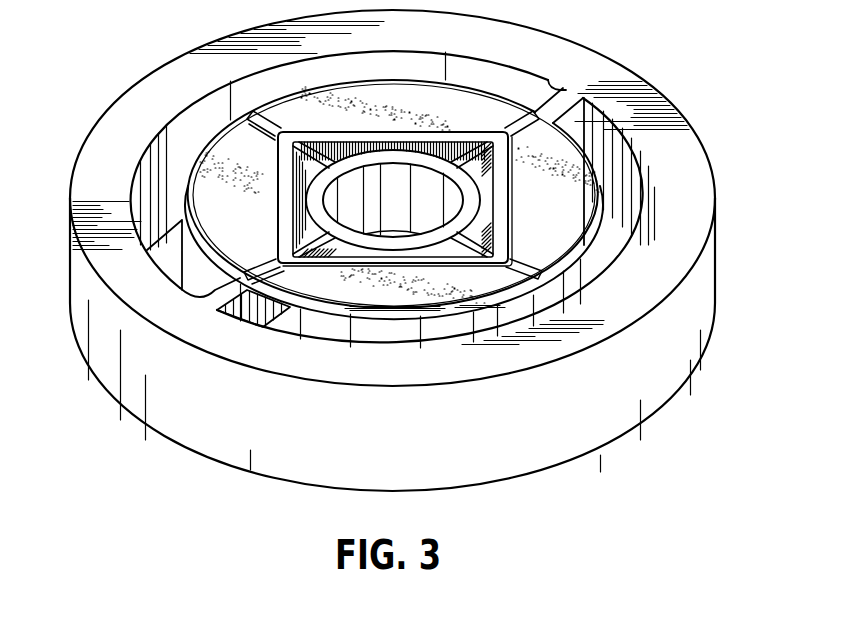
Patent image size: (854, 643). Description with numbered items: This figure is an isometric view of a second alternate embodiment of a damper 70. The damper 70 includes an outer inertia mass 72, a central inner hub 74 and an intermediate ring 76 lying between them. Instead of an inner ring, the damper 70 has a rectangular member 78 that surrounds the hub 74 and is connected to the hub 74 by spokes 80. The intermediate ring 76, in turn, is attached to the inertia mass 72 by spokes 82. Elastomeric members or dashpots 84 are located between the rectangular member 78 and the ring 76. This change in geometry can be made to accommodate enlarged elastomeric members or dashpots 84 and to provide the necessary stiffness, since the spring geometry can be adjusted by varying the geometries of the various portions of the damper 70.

The damper 70 is at (653, 41).
The inertia mass 72 is at (715, 251).
The inner hub 74 is at (330, 200).
The intermediate ring 76 is at (598, 186).
The rectangular member 78 is at (502, 212).
The spokes 80 is at (452, 158).
The spokes 82 is at (551, 79).
The elastomeric members or dashpots 84 is at (403, 92).